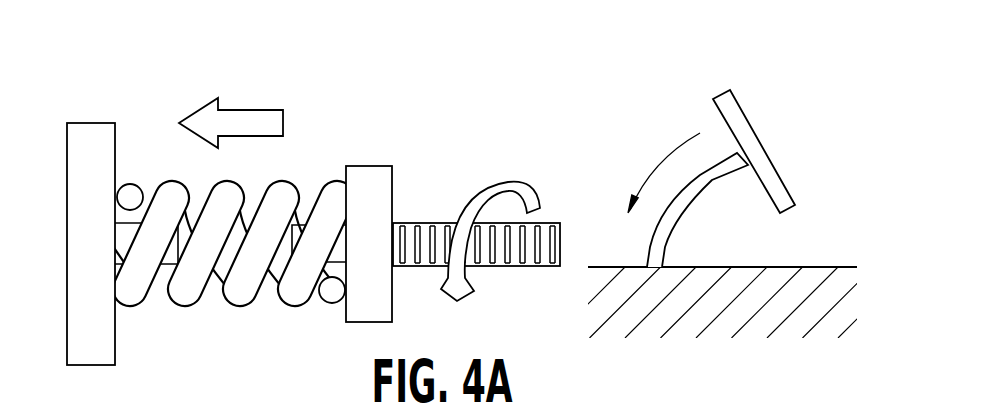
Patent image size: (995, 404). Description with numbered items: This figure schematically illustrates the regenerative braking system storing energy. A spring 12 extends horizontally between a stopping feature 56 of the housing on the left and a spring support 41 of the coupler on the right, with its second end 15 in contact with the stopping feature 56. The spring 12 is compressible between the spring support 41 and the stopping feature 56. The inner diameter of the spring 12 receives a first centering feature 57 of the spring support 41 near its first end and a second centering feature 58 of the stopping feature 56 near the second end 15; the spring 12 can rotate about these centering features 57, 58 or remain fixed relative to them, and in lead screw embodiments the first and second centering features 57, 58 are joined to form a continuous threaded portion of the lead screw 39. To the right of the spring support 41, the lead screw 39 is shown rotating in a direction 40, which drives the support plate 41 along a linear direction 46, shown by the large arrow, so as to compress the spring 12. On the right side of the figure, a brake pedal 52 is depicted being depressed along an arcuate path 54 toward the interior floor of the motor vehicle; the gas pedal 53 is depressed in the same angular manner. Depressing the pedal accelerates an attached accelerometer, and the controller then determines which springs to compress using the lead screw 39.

The spring 12 is at (243, 291).
The second end 15 is at (134, 195).
The lead screw 39 is at (523, 264).
The direction 40 is at (459, 200).
The spring support 41 is at (367, 166).
The linear direction 46 is at (249, 109).
The brake pedal 52 is at (717, 90).
The gas pedal 53 is at (717, 403).
The arcuate path 54 is at (655, 169).
The stopping feature 56 is at (97, 150).
The first centering feature 57 is at (300, 228).
The second centering feature 58 is at (172, 252).